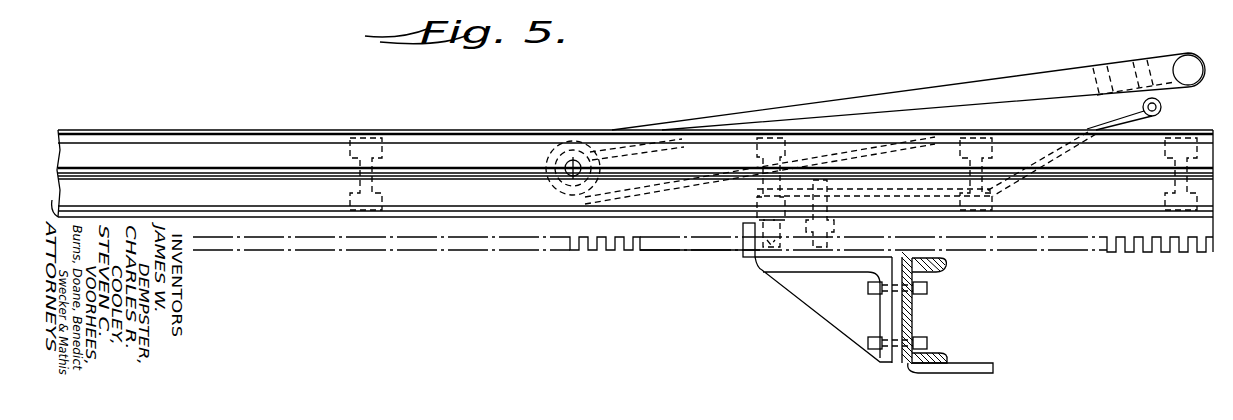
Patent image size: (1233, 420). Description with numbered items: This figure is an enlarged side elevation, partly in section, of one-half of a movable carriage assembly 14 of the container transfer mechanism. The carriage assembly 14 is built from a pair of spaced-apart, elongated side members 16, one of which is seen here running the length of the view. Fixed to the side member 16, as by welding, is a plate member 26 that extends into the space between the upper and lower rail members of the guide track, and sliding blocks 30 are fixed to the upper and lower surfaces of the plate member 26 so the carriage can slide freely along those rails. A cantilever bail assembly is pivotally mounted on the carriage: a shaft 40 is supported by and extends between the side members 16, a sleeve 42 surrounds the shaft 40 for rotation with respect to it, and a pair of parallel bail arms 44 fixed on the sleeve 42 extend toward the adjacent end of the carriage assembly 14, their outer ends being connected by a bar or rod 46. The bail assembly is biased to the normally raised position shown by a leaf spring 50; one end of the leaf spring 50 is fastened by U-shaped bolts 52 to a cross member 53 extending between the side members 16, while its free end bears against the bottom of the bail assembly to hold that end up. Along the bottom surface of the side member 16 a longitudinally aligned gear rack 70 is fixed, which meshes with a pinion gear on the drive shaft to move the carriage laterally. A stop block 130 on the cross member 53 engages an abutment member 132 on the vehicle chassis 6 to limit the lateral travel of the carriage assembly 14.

The chassis 6 is at (827, 310).
The carriage assembly 14 is at (401, 130).
The side member 16 is at (213, 114).
The plate member 26 is at (307, 175).
The sliding block 30 is at (252, 160).
The shaft 40 is at (550, 161).
The sleeve 42 is at (613, 129).
The bail arm 44 is at (938, 87).
The bar or rod 46 is at (1185, 73).
The leaf spring 50 is at (1162, 113).
The U-shaped bolt 52 is at (777, 247).
The cross member 53 is at (833, 207).
The gear rack 70 is at (382, 230).
The stop block 130 is at (760, 232).
The abutment member 132 is at (743, 245).